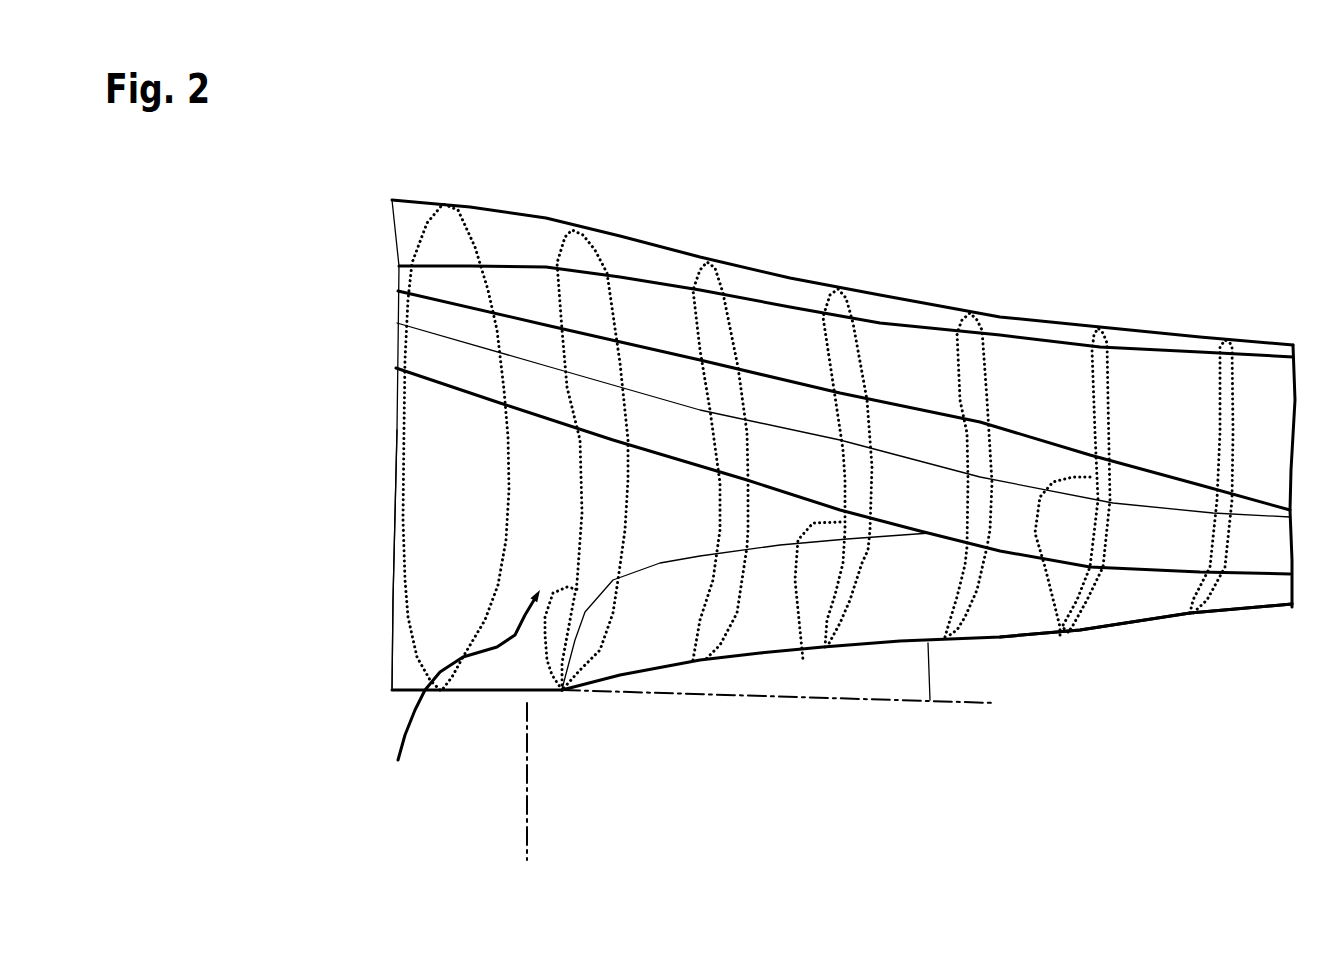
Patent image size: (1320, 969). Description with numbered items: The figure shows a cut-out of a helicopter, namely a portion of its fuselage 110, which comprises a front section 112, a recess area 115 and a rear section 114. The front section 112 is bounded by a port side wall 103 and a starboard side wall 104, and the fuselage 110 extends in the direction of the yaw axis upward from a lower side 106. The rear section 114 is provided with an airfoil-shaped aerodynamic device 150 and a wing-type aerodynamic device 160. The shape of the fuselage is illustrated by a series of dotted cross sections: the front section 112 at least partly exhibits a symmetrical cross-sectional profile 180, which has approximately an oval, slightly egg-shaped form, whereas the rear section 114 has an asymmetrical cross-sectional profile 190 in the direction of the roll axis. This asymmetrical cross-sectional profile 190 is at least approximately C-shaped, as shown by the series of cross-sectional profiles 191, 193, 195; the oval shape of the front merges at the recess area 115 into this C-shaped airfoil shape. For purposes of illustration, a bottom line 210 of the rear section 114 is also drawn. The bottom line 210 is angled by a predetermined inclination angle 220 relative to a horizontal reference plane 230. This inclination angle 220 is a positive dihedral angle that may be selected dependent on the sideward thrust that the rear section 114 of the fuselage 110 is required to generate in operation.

The port side wall 103 is at (335, 560).
The starboard side wall 104 is at (842, 231).
The lower side 106 is at (477, 754).
The fuselage 110 is at (344, 445).
The front section 112 is at (458, 793).
The rear section 114 is at (927, 744).
The recess area 115 is at (459, 694).
The airfoil-shaped aerodynamic device 150 is at (1115, 386).
The wing-type aerodynamic device 160 is at (843, 549).
The symmetrical cross-sectional profile 180 is at (389, 447).
The asymmetrical cross-sectional profile 190 is at (619, 625).
The cross-sectional profile 191 is at (560, 692).
The cross-sectional profile 193 is at (799, 660).
The cross-sectional profile 195 is at (1062, 615).
The bottom line 210 is at (1146, 671).
The predetermined inclination angle 220 is at (968, 720).
The horizontal reference plane 230 is at (778, 744).